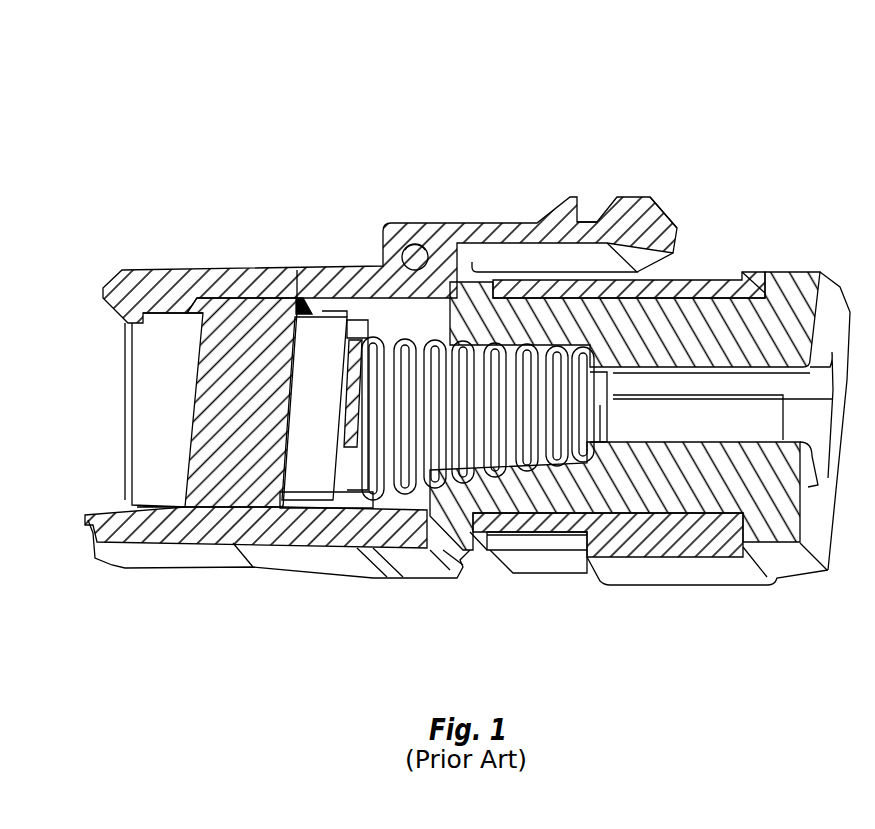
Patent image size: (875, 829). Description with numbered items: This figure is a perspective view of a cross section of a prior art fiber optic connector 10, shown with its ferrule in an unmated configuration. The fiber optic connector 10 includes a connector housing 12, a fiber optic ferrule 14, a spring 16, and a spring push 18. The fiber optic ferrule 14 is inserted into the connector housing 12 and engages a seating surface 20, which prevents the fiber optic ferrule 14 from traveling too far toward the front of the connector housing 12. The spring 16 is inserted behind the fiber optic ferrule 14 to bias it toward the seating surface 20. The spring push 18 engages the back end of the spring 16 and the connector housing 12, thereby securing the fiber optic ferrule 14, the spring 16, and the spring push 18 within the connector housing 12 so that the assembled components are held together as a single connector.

The fiber optic connector 10 is at (500, 110).
The connector housing 12 is at (240, 270).
The fiber optic ferrule 14 is at (145, 403).
The spring 16 is at (427, 508).
The spring push 18 is at (797, 282).
The seating surface 20 is at (300, 298).